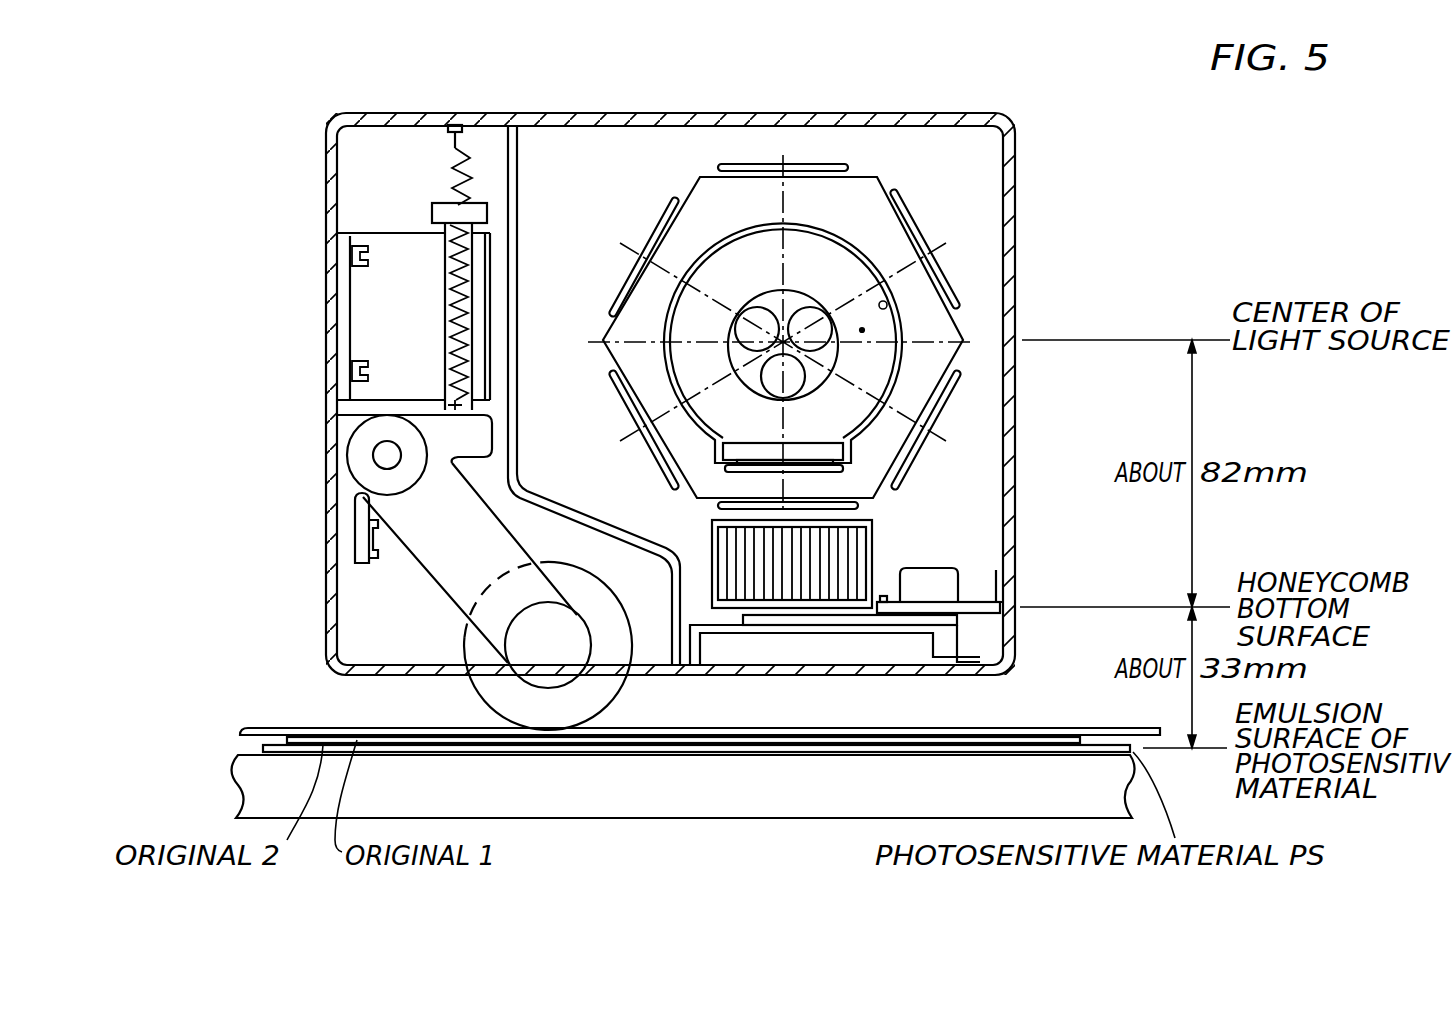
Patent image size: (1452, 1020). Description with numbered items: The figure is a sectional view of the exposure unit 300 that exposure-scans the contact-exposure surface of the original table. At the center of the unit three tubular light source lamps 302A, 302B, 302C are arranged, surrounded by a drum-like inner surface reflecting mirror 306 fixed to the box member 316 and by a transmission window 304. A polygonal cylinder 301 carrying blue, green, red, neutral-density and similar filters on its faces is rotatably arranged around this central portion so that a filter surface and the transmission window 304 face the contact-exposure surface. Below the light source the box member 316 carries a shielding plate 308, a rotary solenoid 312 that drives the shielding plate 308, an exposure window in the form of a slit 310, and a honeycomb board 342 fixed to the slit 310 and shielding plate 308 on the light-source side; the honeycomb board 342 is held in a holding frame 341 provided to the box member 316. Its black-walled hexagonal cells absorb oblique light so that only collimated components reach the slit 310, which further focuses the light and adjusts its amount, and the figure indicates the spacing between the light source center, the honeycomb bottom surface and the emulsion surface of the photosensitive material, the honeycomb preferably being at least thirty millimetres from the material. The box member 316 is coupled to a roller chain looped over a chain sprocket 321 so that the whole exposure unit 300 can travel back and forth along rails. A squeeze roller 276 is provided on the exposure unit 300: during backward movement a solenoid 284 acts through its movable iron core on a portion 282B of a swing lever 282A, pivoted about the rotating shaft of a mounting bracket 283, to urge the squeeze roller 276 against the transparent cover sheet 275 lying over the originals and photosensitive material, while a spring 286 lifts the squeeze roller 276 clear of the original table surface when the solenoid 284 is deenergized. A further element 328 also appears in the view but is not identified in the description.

The exposure unit 300 is at (567, 100).
The spring 286 is at (455, 165).
The solenoid 284 is at (389, 232).
The portion of swing lever 282B is at (430, 418).
The mounting bracket 283 is at (356, 498).
The swing lever 282A is at (430, 573).
The polygonal cylinder 301 is at (713, 168).
The tubular light source lamp 302A is at (813, 308).
The tubular light source lamp 302B is at (757, 308).
The tubular light source lamp 302C is at (806, 372).
The chain sprocket 321 is at (905, 235).
The inner surface reflecting mirror 306 is at (887, 303).
The box member 316 is at (1005, 250).
The transmission window 304 is at (753, 452).
The bottom plate 328 is at (892, 497).
The holding frame 341 is at (870, 520).
The honeycomb board 342 is at (853, 553).
The rotary solenoid 312 is at (937, 568).
The shielding plate 308 is at (740, 624).
The slit 310 is at (782, 678).
The squeeze roller 276 is at (602, 708).
The transparent cover sheet 275 is at (238, 731).